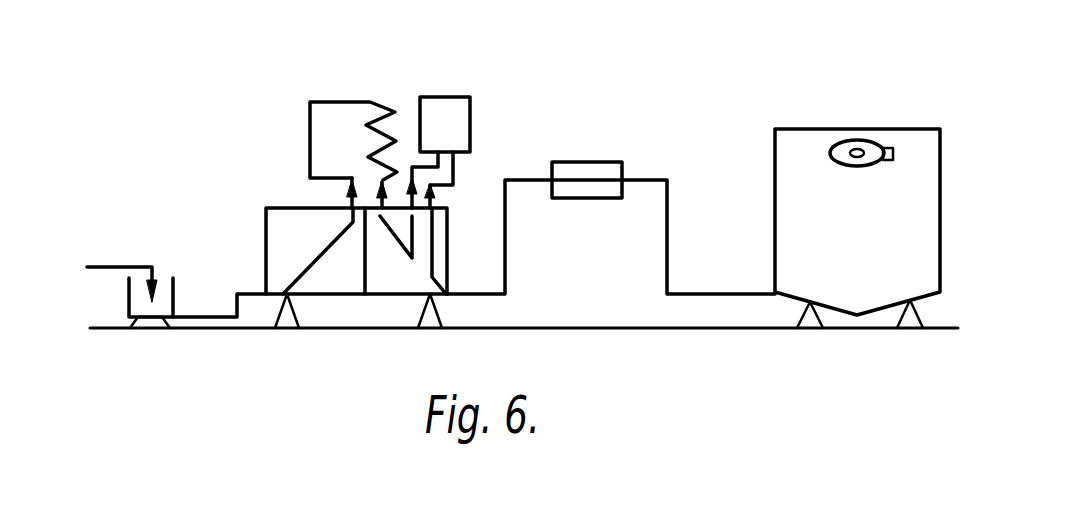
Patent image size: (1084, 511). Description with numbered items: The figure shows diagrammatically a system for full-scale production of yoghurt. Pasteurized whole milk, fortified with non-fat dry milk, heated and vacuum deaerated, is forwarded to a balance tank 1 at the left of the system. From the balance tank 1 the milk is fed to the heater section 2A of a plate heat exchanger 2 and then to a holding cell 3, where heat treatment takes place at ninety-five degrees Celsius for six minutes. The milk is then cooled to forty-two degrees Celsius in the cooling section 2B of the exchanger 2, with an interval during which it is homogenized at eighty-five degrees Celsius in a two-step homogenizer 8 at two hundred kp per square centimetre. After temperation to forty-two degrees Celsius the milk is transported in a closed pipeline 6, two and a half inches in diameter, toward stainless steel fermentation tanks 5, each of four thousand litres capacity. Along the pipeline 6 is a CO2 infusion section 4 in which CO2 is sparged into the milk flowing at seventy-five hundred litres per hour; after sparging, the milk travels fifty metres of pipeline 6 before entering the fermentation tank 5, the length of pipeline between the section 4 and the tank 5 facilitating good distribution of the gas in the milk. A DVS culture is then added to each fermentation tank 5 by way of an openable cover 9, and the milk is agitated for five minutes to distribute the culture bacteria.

The balance tank 1 is at (126, 301).
The plate heat exchanger 2 is at (357, 297).
The heater section 2A is at (351, 287).
The cooling section 2B is at (409, 287).
The holding cell 3 is at (368, 108).
The CO2 infusion section 4 is at (588, 170).
The fermentation tank 5 is at (868, 254).
The closed pipeline 6 is at (670, 243).
The two-step homogenizer 8 is at (463, 114).
The openable cover 9 is at (857, 140).